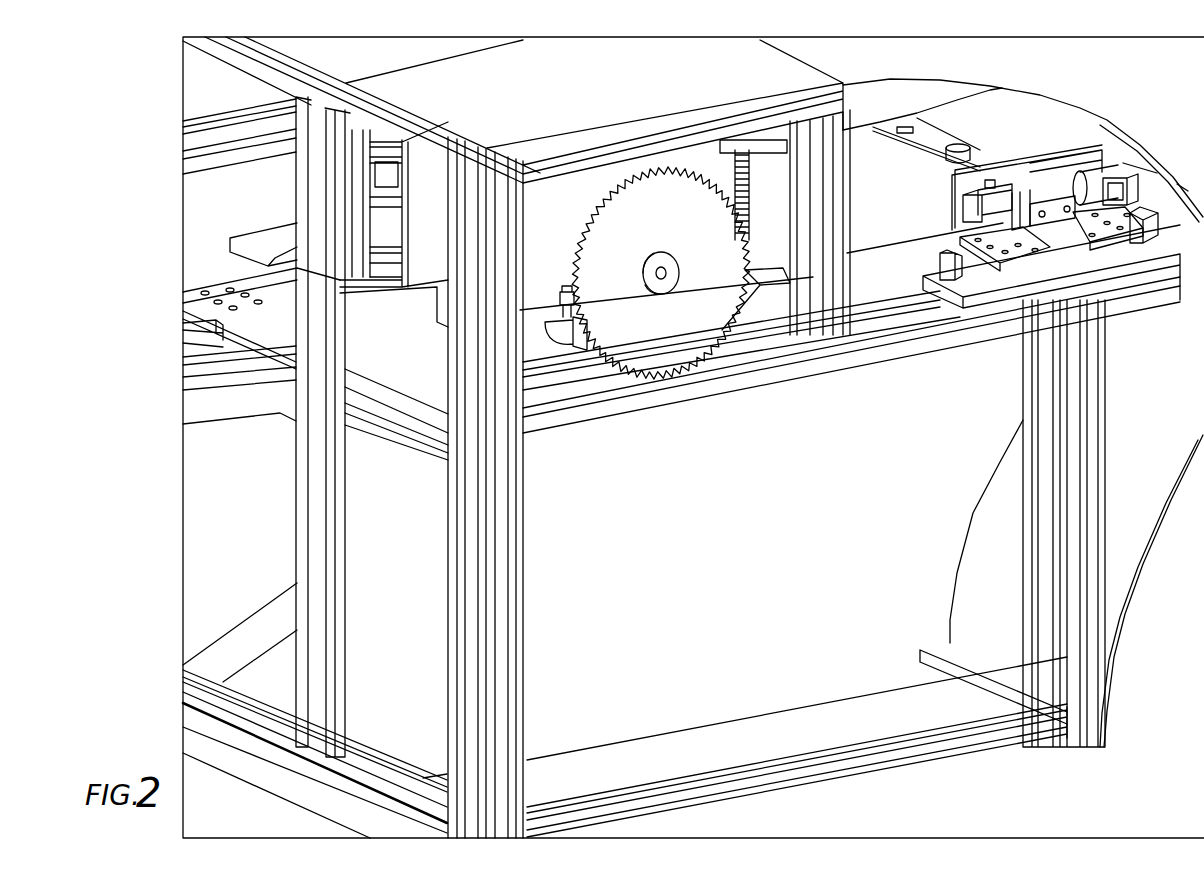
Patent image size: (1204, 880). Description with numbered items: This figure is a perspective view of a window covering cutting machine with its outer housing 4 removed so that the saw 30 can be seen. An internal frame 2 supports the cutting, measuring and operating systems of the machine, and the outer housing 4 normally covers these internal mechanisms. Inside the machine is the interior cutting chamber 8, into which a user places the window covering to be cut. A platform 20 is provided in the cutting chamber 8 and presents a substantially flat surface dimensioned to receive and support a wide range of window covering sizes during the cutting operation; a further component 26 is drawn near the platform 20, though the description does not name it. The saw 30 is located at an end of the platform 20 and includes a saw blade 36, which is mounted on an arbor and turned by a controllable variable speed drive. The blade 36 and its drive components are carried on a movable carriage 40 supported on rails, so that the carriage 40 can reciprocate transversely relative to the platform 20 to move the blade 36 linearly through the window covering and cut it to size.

The internal frame 2 is at (1104, 440).
The outer housing 4 is at (1132, 612).
The cutting chamber 8 is at (909, 197).
The platform 20 is at (863, 230).
The clamp fixture 26 is at (1050, 143).
The saw 30 is at (665, 400).
The saw blade 36 is at (621, 212).
The movable carriage 40 is at (417, 378).